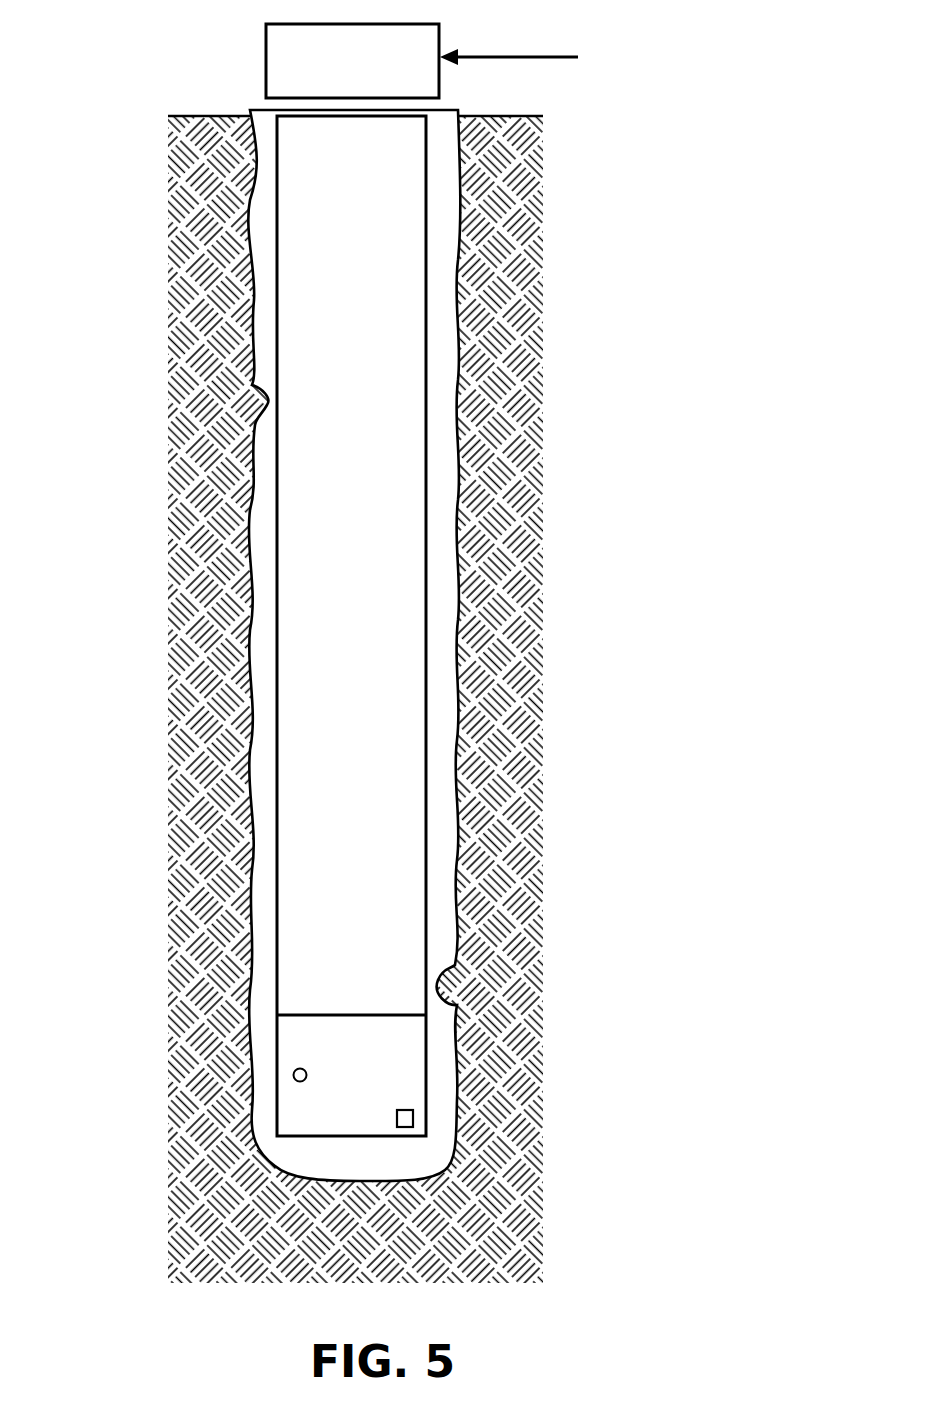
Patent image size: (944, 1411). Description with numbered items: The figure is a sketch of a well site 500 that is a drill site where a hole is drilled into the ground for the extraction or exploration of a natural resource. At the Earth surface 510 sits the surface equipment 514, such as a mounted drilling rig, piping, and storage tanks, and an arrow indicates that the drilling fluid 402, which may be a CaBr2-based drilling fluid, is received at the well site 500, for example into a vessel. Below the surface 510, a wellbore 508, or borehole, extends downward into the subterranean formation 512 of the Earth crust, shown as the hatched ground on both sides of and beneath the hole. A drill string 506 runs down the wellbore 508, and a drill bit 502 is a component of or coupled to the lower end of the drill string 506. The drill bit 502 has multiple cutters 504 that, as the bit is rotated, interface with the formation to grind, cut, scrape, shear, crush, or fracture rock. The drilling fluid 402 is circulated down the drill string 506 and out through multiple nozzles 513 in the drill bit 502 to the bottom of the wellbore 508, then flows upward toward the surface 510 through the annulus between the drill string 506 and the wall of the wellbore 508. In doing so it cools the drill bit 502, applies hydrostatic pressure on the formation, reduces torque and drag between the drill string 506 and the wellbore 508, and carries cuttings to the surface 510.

The drilling fluid 402 is at (500, 57).
The well site 500 is at (391, 1326).
The drill bit 502 is at (320, 1120).
The cutters 504 is at (413, 1120).
The drill string 506 is at (388, 752).
The wellbore 508 is at (262, 404).
The Earth surface 510 is at (205, 116).
The formation 512 is at (197, 224).
The nozzles 513 is at (295, 1081).
The surface equipment 514 is at (374, 72).